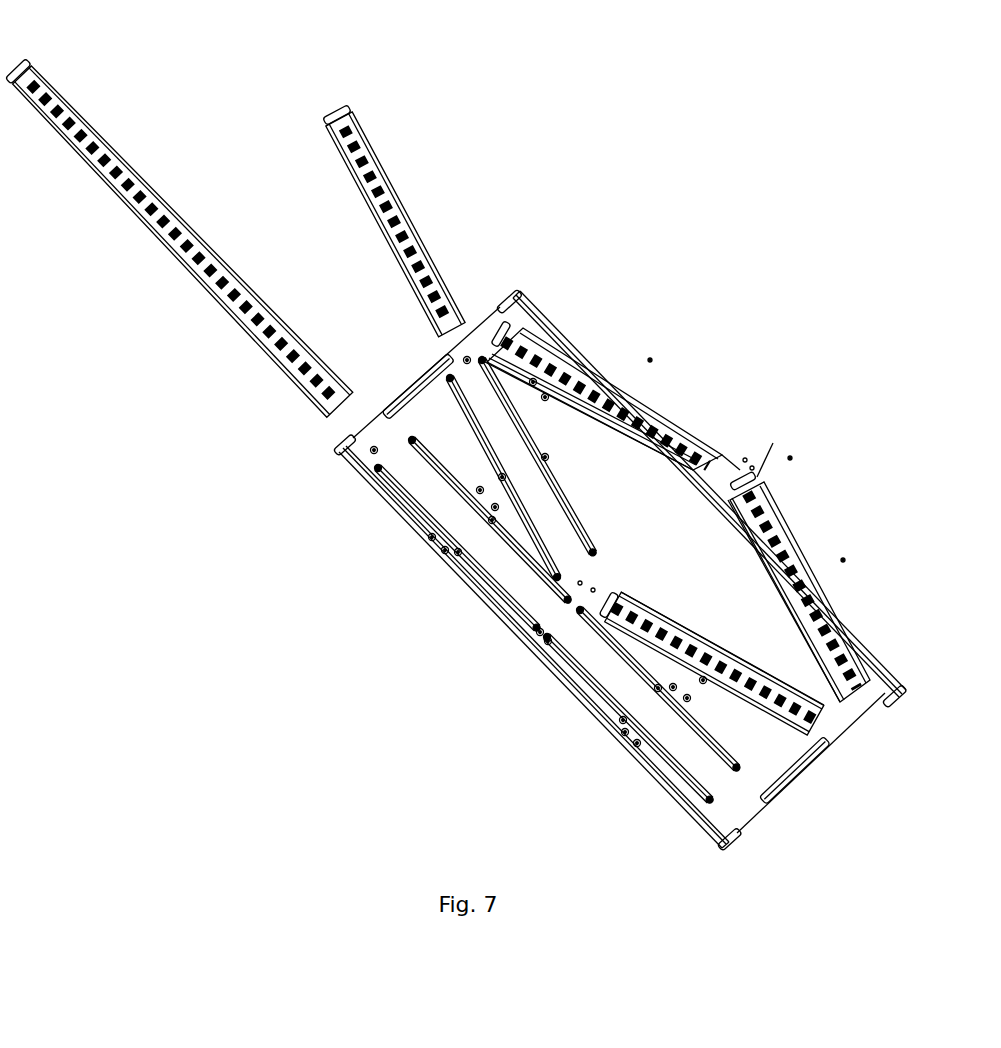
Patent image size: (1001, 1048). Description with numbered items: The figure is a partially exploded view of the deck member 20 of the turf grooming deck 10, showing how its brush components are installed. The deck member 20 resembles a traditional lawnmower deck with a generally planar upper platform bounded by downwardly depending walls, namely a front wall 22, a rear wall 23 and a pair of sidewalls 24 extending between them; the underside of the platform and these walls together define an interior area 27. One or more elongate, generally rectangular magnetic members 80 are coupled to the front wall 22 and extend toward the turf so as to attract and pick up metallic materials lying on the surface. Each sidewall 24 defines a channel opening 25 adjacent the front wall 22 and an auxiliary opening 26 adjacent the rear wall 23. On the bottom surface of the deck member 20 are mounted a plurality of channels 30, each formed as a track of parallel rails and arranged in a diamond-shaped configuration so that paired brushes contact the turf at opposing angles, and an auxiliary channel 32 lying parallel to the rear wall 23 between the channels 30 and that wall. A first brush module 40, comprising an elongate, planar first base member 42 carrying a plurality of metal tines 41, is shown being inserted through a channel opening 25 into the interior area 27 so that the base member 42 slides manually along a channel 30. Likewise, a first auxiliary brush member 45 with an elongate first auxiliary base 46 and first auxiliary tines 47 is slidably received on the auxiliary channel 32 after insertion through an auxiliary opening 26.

The turf grooming deck 10 is at (801, 274).
The deck member 20 is at (606, 777).
The front wall 22 is at (680, 383).
The rear wall 23 is at (530, 640).
The sidewall 24 is at (415, 386).
The channel opening 25 is at (478, 298).
The auxiliary opening 26 is at (378, 416).
The interior area 27 is at (712, 486).
The channel 30 is at (620, 420).
The auxiliary channel 32 is at (470, 418).
The first brush module 40 is at (413, 187).
The tine 41 is at (370, 203).
The first base member 42 is at (348, 117).
The first auxiliary brush member 45 is at (135, 130).
The first auxiliary base 46 is at (33, 64).
The first auxiliary tine 47 is at (88, 160).
The magnetic member 80 is at (610, 358).